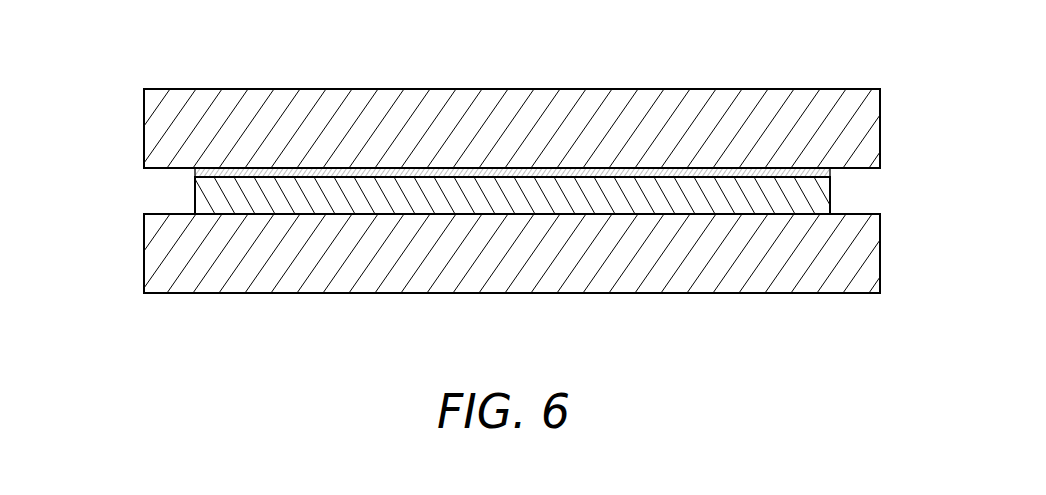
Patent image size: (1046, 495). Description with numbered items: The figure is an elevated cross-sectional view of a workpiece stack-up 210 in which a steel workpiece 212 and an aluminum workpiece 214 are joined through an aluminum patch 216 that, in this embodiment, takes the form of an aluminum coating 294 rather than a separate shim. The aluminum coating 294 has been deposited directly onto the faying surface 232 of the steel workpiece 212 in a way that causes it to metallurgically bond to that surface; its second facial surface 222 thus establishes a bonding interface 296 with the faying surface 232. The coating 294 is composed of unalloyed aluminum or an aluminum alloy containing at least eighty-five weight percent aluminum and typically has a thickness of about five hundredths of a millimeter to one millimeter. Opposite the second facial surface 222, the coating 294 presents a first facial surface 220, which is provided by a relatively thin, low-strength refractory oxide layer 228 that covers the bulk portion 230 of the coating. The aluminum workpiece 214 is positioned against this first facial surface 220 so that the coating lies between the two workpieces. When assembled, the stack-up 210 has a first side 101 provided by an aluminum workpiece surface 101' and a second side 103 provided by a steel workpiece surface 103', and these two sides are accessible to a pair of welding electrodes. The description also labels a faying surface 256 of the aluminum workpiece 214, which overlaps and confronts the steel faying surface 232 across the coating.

The workpiece stack-up 210 is at (502, 191).
The aluminum workpiece 214 is at (168, 130).
The steel workpiece 212 is at (160, 247).
The first side 101 is at (499, 48).
The aluminum workpiece surface 101' is at (240, 48).
The second side 103 is at (499, 333).
The steel workpiece surface 103' is at (235, 333).
The refractory oxide layer 228 is at (345, 173).
The first facial surface 220 is at (323, 177).
The bulk portion 230 is at (258, 193).
The aluminum patch 216 is at (186, 190).
The aluminum coating 294 is at (202, 200).
The second facial surface 222 is at (262, 215).
The bonding interface 296 is at (406, 213).
The overhang of first plate 256 is at (855, 168).
The faying surface 232 is at (857, 214).